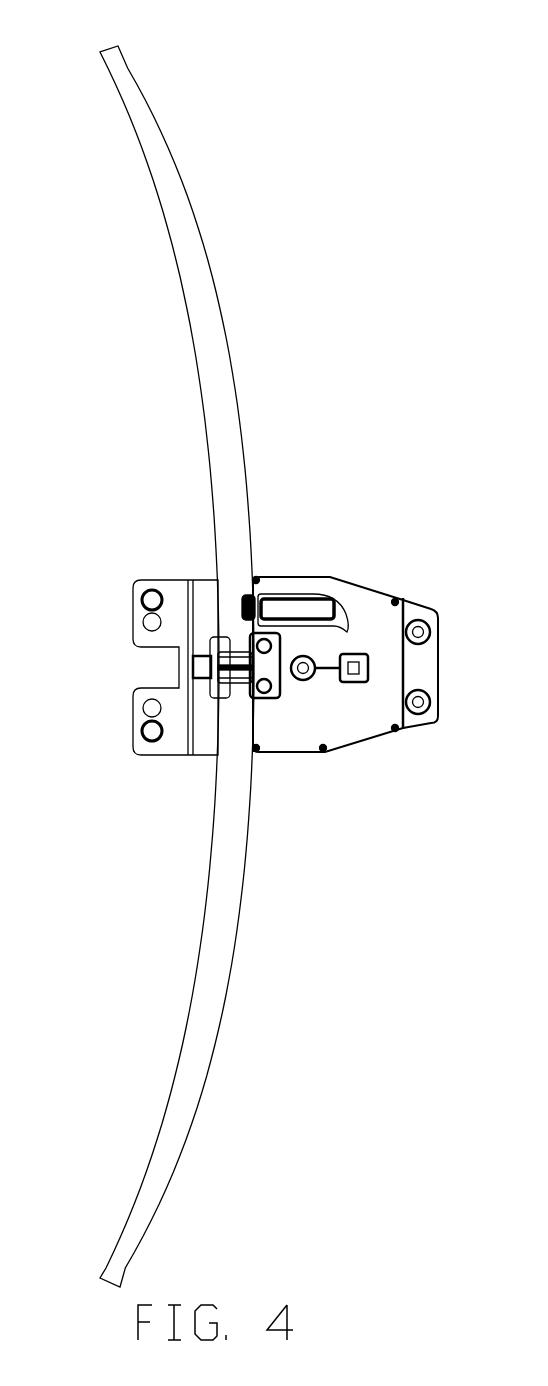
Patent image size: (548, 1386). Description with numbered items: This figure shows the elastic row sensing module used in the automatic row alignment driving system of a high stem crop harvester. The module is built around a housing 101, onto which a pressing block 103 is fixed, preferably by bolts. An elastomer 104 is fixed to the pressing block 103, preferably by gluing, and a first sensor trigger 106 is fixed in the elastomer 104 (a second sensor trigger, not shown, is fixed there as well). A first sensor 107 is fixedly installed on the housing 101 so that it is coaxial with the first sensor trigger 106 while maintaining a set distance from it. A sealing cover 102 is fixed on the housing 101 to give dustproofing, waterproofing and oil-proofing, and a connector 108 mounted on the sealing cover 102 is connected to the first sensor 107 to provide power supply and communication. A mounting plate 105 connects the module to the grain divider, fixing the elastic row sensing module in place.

The housing 101 is at (418, 730).
The sealing cover 102 is at (347, 723).
The pressing block 103 is at (273, 755).
The elastomer 104 is at (215, 740).
The mounting plate 105 is at (134, 714).
The first sensor trigger 106 is at (179, 529).
The first sensor 107 is at (311, 535).
The connector 108 is at (404, 560).